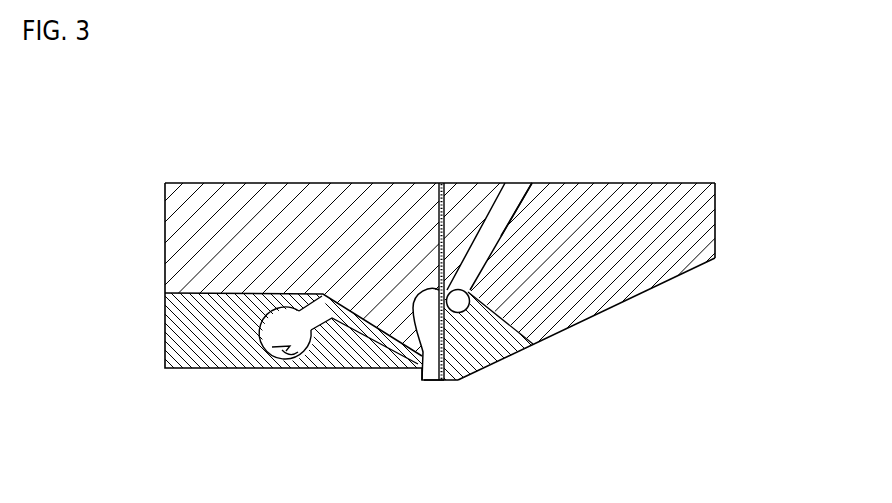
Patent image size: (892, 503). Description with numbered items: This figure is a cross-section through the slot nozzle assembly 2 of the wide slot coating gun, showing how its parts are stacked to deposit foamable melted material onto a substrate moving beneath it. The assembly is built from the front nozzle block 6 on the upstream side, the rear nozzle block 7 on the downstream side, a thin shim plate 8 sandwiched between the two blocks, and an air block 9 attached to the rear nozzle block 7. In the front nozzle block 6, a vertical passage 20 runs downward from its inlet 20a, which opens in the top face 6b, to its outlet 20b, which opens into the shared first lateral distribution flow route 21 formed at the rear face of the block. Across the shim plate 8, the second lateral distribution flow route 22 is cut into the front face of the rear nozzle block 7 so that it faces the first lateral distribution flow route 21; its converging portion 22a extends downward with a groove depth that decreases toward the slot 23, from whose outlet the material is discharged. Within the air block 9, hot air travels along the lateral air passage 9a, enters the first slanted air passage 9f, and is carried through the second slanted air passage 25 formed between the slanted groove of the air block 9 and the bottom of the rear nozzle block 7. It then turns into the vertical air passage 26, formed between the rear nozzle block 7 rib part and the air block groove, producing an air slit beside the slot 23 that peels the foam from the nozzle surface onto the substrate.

The slot nozzle assembly 2 is at (700, 150).
The front nozzle block 6 is at (703, 228).
The top face 6b is at (612, 183).
The rear nozzle block 7 is at (235, 228).
The shim plate 8 is at (443, 183).
The air block 9 is at (193, 353).
The lateral air passage 9a is at (292, 345).
The first slanted air passage 9f is at (317, 347).
The vertical passage 20 is at (495, 218).
The inlet 20a is at (516, 200).
The outlet 20b is at (533, 340).
The first lateral distribution flow route 21 is at (505, 350).
The second lateral distribution flow route 22 is at (435, 285).
The converging portion 22a is at (383, 343).
The slot 23 is at (468, 402).
The second slanted air passage 25 is at (348, 343).
The vertical air passage 26 is at (420, 380).